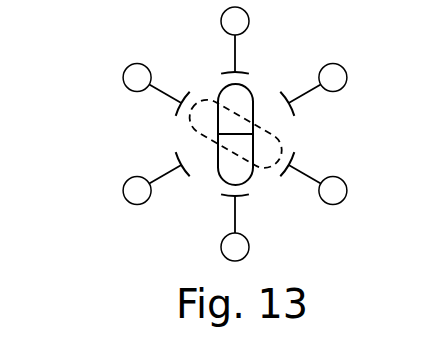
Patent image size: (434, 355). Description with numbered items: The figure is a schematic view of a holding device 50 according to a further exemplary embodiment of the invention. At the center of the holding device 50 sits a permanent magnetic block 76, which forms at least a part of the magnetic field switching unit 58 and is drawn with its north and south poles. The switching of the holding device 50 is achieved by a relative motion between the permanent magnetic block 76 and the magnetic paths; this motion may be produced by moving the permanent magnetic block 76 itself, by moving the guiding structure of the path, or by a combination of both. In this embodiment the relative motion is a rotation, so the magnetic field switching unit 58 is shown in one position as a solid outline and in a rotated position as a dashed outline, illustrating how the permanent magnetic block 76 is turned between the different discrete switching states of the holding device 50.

The holding device 50 is at (118, 110).
The magnetic field switching unit 58 is at (219, 106).
The permanent magnetic block 76 is at (217, 110).